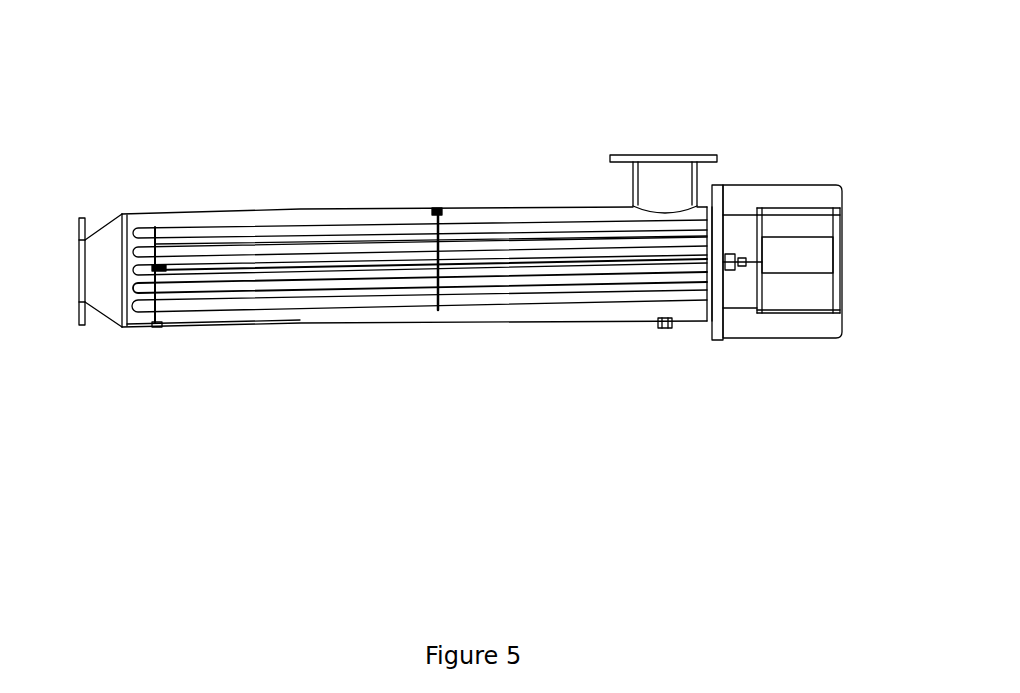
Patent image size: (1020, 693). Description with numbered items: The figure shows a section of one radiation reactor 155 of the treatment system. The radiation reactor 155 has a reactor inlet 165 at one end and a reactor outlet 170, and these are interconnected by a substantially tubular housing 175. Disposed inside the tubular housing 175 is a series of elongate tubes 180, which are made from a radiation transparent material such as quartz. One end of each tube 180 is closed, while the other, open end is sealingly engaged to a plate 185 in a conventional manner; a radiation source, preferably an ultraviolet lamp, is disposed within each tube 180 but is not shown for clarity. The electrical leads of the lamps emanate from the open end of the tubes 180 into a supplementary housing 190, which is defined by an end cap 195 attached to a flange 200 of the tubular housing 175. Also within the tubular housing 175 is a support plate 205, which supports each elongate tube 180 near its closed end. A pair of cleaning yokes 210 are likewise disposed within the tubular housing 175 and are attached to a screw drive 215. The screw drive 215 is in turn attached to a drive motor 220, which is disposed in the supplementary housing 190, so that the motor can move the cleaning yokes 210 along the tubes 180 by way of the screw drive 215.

The radiation reactor 155 is at (422, 392).
The reactor inlet 165 is at (78, 318).
The reactor outlet 170 is at (618, 153).
The tubular housing 175 is at (298, 208).
The elongate tubes 180 is at (175, 228).
The plate 185 is at (725, 188).
The supplementary housing 190 is at (775, 330).
The end cap 195 is at (832, 183).
The flange 200 is at (713, 338).
The support plate 205 is at (147, 323).
The cleaning yokes 210 is at (430, 208).
The screw drive 215 is at (305, 270).
The drive motor 220 is at (822, 262).